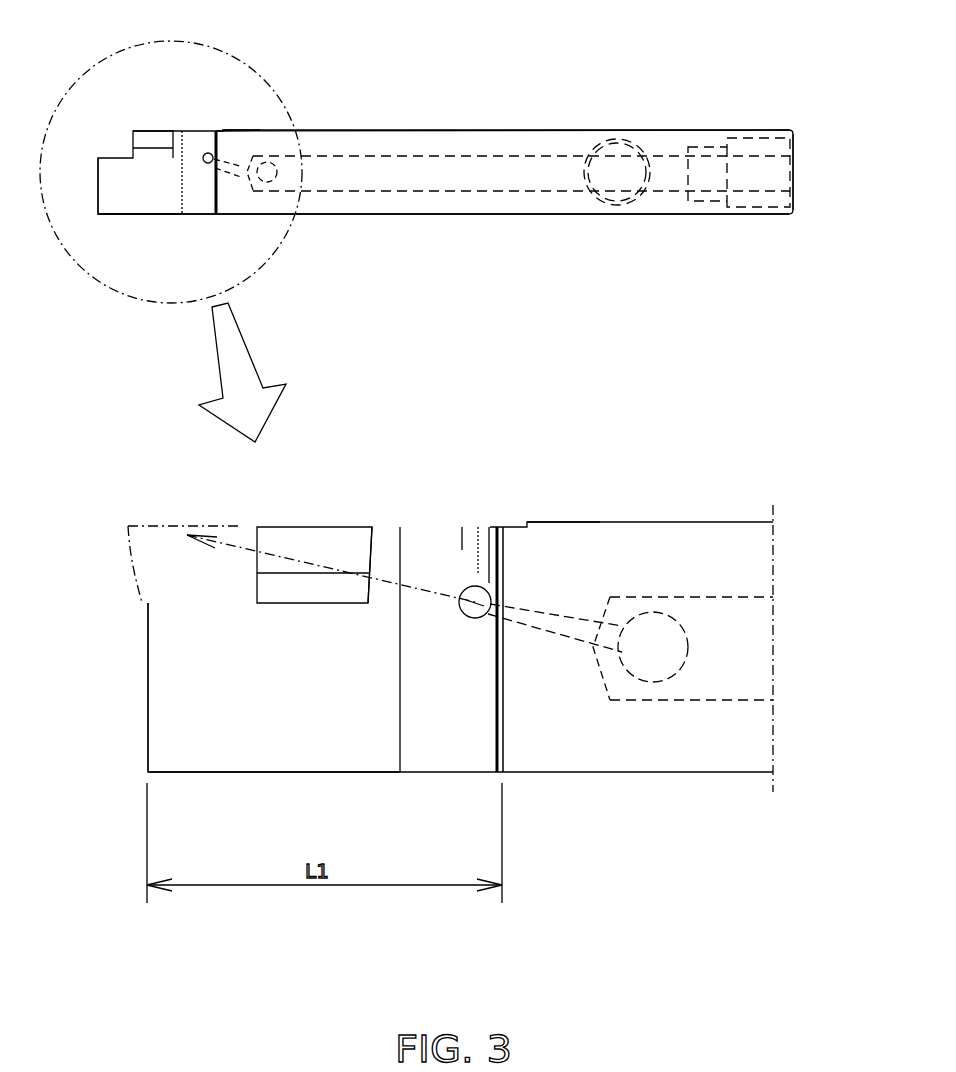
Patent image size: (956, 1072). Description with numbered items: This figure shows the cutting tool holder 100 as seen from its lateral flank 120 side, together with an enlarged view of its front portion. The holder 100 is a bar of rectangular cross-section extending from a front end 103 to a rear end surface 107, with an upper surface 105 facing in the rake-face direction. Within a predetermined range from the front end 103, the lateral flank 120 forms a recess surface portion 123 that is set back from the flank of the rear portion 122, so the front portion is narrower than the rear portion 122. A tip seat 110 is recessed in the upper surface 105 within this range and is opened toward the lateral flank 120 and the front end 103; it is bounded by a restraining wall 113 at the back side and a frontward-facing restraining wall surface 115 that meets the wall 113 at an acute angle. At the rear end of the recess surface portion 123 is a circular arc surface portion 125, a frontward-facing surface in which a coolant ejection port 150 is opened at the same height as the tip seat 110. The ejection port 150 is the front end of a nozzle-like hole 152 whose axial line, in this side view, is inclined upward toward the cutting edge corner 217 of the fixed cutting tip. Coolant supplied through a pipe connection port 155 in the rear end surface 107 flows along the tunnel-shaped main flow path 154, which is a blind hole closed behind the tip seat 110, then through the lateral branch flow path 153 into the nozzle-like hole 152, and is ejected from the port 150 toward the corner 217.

The cutting tool holder 100 is at (465, 118).
The front end 103 is at (148, 648).
The upper surface 105 is at (228, 128).
The rear end surface 107 is at (793, 213).
The tip seat 110 is at (112, 157).
The restraining wall 113 is at (272, 545).
The frontward-facing restraining wall surface 115 is at (372, 548).
The lateral flank 120 is at (378, 146).
The rear portion 122 is at (537, 214).
The recess surface portion 123 is at (135, 185).
The circular arc surface portion 125 is at (193, 193).
The coolant ejection port 150 is at (204, 154).
The nozzle-like hole 152 is at (549, 636).
The branch flow path 153 is at (660, 610).
The main flow path 154 is at (520, 168).
The coolant pipe connection port 155 is at (620, 148).
The cutting edge corner 217 is at (128, 526).